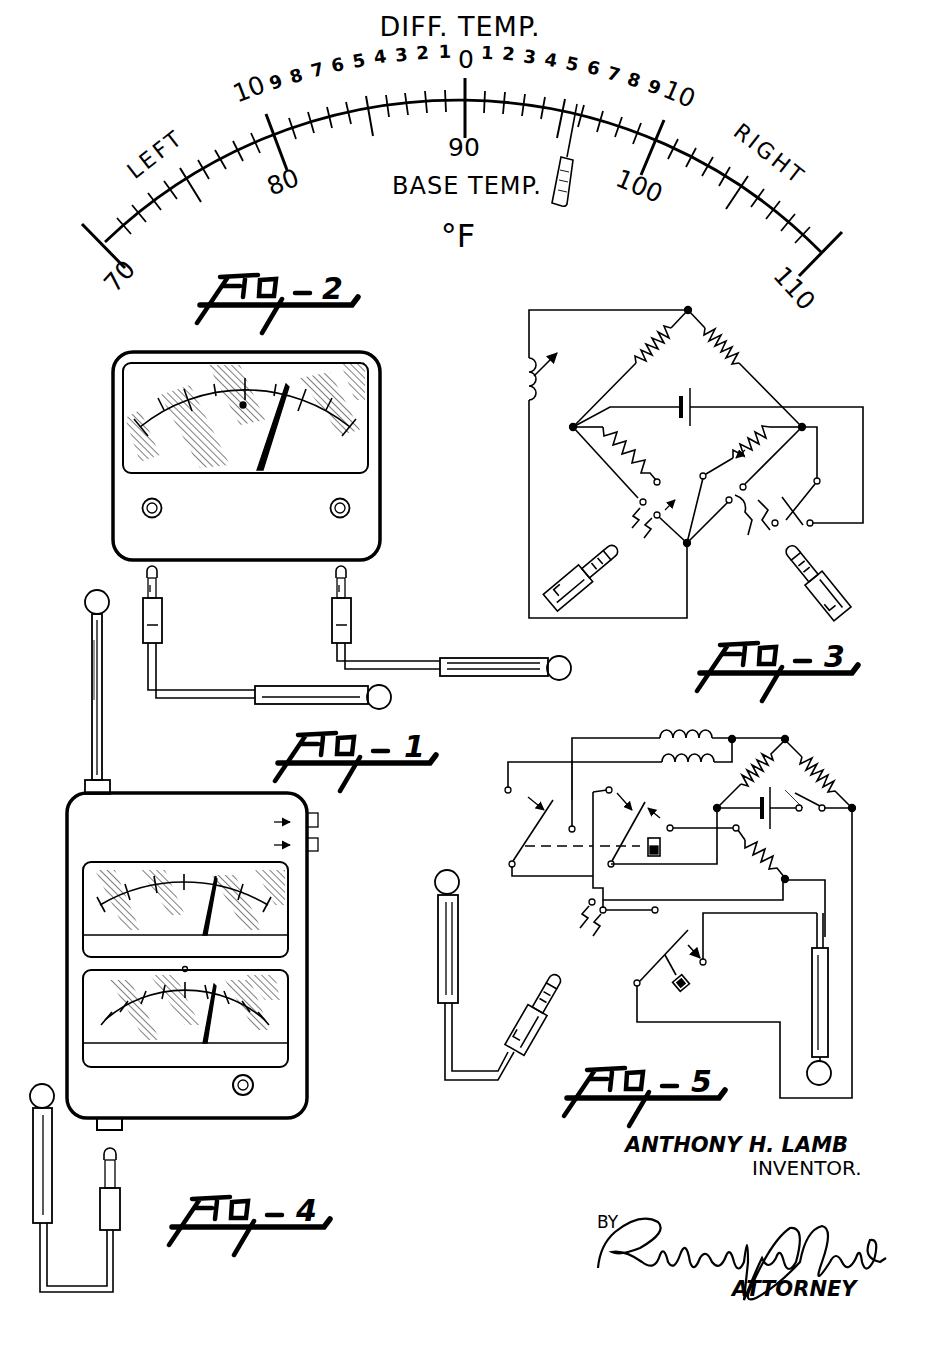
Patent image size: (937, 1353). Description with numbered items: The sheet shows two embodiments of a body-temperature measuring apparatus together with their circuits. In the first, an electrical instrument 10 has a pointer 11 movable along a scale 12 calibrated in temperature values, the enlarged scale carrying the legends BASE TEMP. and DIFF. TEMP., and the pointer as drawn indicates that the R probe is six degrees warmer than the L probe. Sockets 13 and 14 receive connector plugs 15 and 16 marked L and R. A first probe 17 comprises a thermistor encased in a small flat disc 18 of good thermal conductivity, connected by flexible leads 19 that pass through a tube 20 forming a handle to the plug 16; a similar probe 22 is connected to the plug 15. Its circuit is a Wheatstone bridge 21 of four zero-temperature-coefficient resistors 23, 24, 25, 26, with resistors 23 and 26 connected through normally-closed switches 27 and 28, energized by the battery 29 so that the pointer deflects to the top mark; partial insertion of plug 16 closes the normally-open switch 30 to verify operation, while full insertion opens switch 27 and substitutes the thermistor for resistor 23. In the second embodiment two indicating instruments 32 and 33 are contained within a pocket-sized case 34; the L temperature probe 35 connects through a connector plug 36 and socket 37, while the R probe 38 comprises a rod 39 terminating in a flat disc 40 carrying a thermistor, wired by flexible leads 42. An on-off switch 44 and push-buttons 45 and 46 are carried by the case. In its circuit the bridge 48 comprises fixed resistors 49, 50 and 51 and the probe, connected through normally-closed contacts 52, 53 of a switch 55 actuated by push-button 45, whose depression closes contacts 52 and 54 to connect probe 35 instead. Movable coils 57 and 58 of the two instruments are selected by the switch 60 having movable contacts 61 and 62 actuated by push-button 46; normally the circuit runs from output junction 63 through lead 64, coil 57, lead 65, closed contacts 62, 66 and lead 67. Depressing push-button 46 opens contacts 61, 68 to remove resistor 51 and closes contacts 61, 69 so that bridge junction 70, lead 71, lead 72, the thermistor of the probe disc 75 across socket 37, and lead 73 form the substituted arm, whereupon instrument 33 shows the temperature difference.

In FIG. 1, the electrical instrument 10 is at (412, 380).
In FIG. 2, the pointer 11 is at (566, 195).
In FIG. 1, the pointer 11 is at (272, 452).
In FIG. 3, the pointer 11 is at (518, 404).
In FIG. 1, the scale 12 is at (190, 396).
In FIG. 1, the socket 13 is at (141, 508).
In FIG. 3, the socket 13 is at (612, 501).
In FIG. 1, the socket 14 is at (351, 507).
In FIG. 3, the socket 14 is at (744, 495).
In FIG. 1, the connector plug 15 is at (158, 584).
In FIG. 3, the connector plug 15 is at (561, 580).
In FIG. 1, the connector plug 16 is at (348, 584).
In FIG. 3, the connector plug 16 is at (845, 582).
In FIG. 1, the first probe 17 is at (506, 657).
In FIG. 1, the disc 18 is at (564, 657).
In FIG. 1, the flexible leads 19 is at (373, 661).
In FIG. 1, the tube 20 is at (447, 658).
In FIG. 3, the Wheatstone bridge 21 is at (696, 374).
In FIG. 1, the probe 22 is at (283, 684).
In FIG. 3, the bridge resistor 23 is at (752, 446).
In FIG. 3, the bridge resistor 24 is at (742, 344).
In FIG. 3, the bridge resistor 25 is at (650, 345).
In FIG. 3, the bridge resistor 26 is at (646, 454).
In FIG. 3, the normally-closed switch 27 is at (725, 461).
In FIG. 3, the normally-closed switch 28 is at (692, 490).
In FIG. 3, the battery 29 is at (702, 395).
In FIG. 3, the normally-open switch 30 is at (808, 504).
In FIG. 4, the indicating instrument 32 is at (285, 912).
In FIG. 4, the indicating instrument 33 is at (280, 1000).
In FIG. 4, the case 34 is at (140, 794).
In FIG. 4, the L temperature probe 35 is at (100, 1155).
In FIG. 5, the L temperature probe 35 is at (500, 945).
In FIG. 4, the connector plug 36 is at (122, 1197).
In FIG. 5, the connector plug 36 is at (522, 1010).
In FIG. 4, the socket 37 is at (125, 1130).
In FIG. 5, the socket 37 is at (576, 932).
In FIG. 4, the R probe 38 is at (91, 652).
In FIG. 4, the rod 39 is at (93, 686).
In FIG. 5, the rod 39 is at (831, 985).
In FIG. 4, the flat disc 40 is at (88, 593).
In FIG. 5, the flat disc 40 is at (834, 1076).
In FIG. 5, the flexible leads 42 is at (852, 916).
In FIG. 4, the on-off switch 44 is at (247, 1094).
In FIG. 5, the on-off switch 44 is at (808, 811).
In FIG. 4, the push-button 45 is at (318, 818).
In FIG. 5, the push-button 45 is at (690, 988).
In FIG. 4, the push-button 46 is at (318, 845).
In FIG. 5, the push-button 46 is at (662, 848).
In FIG. 5, the bridge 48 is at (792, 782).
In FIG. 5, the fixed resistor 49 is at (822, 766).
In FIG. 5, the fixed resistor 50 is at (742, 776).
In FIG. 5, the fixed resistor 51 is at (762, 847).
In FIG. 5, the switch contact 52 is at (686, 930).
In FIG. 5, the switch contact 53 is at (708, 950).
In FIG. 5, the switch contact 54 is at (670, 925).
In FIG. 5, the switch 55 is at (666, 938).
In FIG. 5, the movable coil 57 is at (681, 728).
In FIG. 5, the movable coil 58 is at (663, 762).
In FIG. 5, the switch 60 is at (545, 905).
In FIG. 5, the movable contact 61 is at (632, 821).
In FIG. 5, the movable contact 62 is at (537, 829).
In FIG. 5, the output junction 63 is at (788, 738).
In FIG. 5, the lead 64 is at (762, 723).
In FIG. 5, the lead 65 is at (583, 737).
In FIG. 5, the switch contact 66 is at (553, 801).
In FIG. 5, the lead 67 is at (549, 858).
In FIG. 5, the switch contact 68 is at (646, 810).
In FIG. 5, the switch contact 69 is at (604, 797).
In FIG. 5, the bridge junction 70 is at (682, 826).
In FIG. 5, the lead 71 is at (712, 848).
In FIG. 5, the lead 72 is at (575, 852).
In FIG. 5, the lead 73 is at (630, 911).
In FIG. 4, the probe disc 75 is at (40, 1083).
In FIG. 5, the probe disc 75 is at (446, 875).